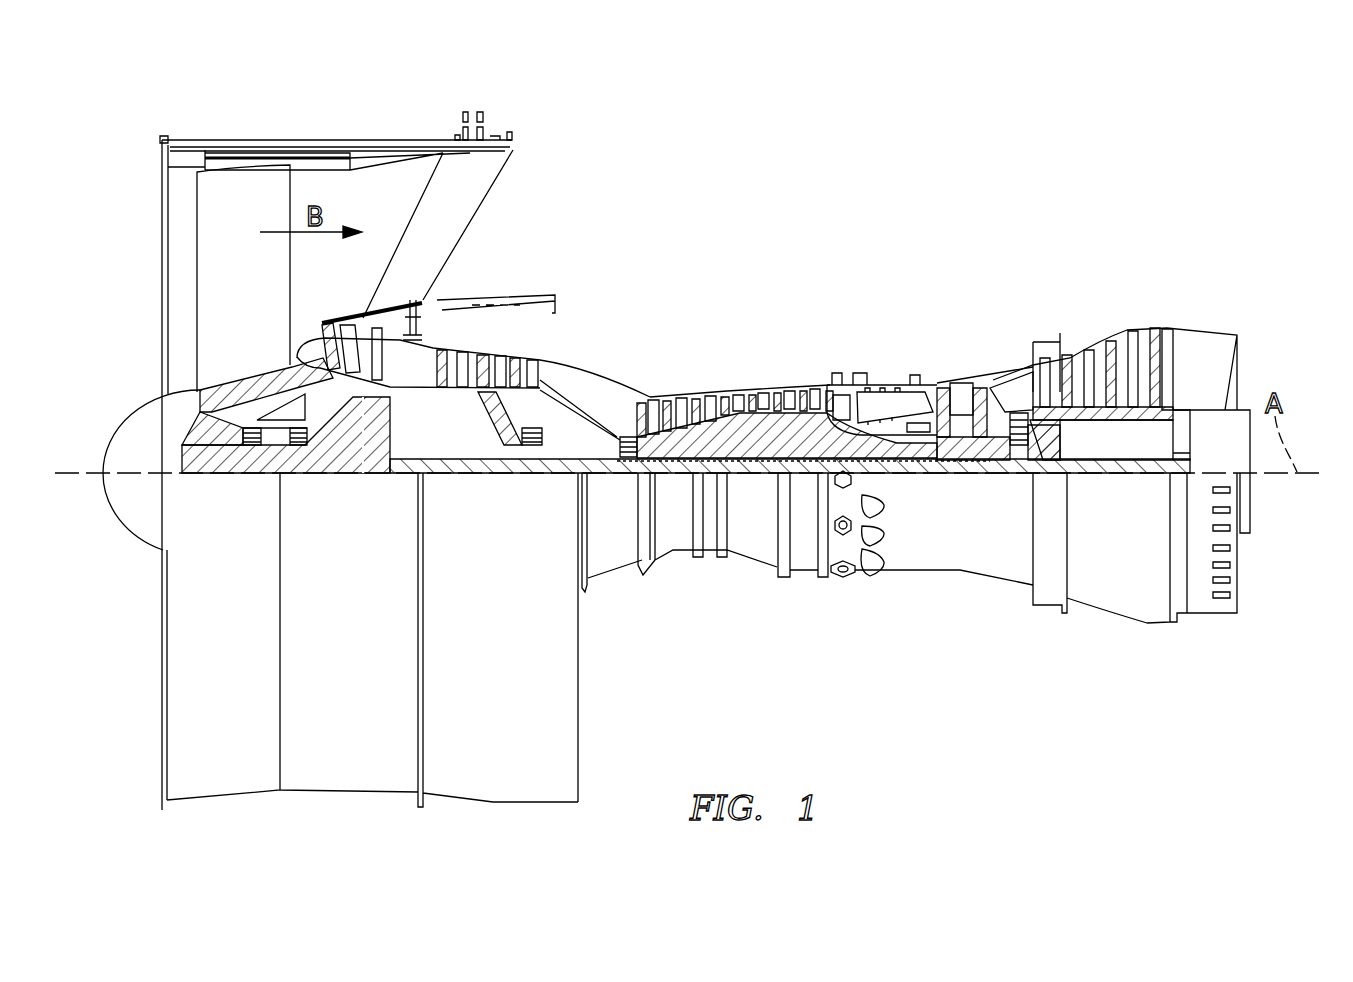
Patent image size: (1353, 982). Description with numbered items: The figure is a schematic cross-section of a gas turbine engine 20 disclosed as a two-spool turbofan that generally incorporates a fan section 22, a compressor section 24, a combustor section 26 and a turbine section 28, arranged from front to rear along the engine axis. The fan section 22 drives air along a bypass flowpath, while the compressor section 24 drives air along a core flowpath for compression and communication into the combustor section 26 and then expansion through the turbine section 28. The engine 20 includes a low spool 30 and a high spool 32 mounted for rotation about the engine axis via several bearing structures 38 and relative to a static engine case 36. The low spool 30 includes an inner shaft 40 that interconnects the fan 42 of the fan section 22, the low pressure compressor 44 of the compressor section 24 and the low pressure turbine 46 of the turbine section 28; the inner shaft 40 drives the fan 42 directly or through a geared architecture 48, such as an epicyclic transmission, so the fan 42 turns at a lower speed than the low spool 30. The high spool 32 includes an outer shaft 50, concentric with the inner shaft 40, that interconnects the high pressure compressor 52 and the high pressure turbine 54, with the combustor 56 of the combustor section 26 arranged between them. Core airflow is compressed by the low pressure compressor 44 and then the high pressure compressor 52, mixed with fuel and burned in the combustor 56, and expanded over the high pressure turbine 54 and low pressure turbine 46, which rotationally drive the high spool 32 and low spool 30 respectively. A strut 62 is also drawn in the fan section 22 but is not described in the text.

The gas turbine engine 20 is at (921, 188).
The fan section 22 is at (418, 123).
The compressor section 24 is at (428, 275).
The combustor section 26 is at (945, 275).
The turbine section 28 is at (1177, 275).
The low spool 30 is at (758, 475).
The high spool 32 is at (785, 438).
The static engine case 36 is at (805, 572).
The bearing structures 38 is at (252, 448).
The inner shaft 40 is at (603, 478).
The fan 42 is at (262, 323).
The low pressure compressor 44 is at (500, 366).
The low pressure turbine 46 is at (1103, 352).
The geared architecture 48 is at (372, 458).
The outer shaft 50 is at (875, 456).
The high pressure compressor 52 is at (740, 438).
The high pressure turbine 54 is at (967, 382).
The combustor 56 is at (888, 407).
The fan exit guide vane / strut 62 is at (421, 152).